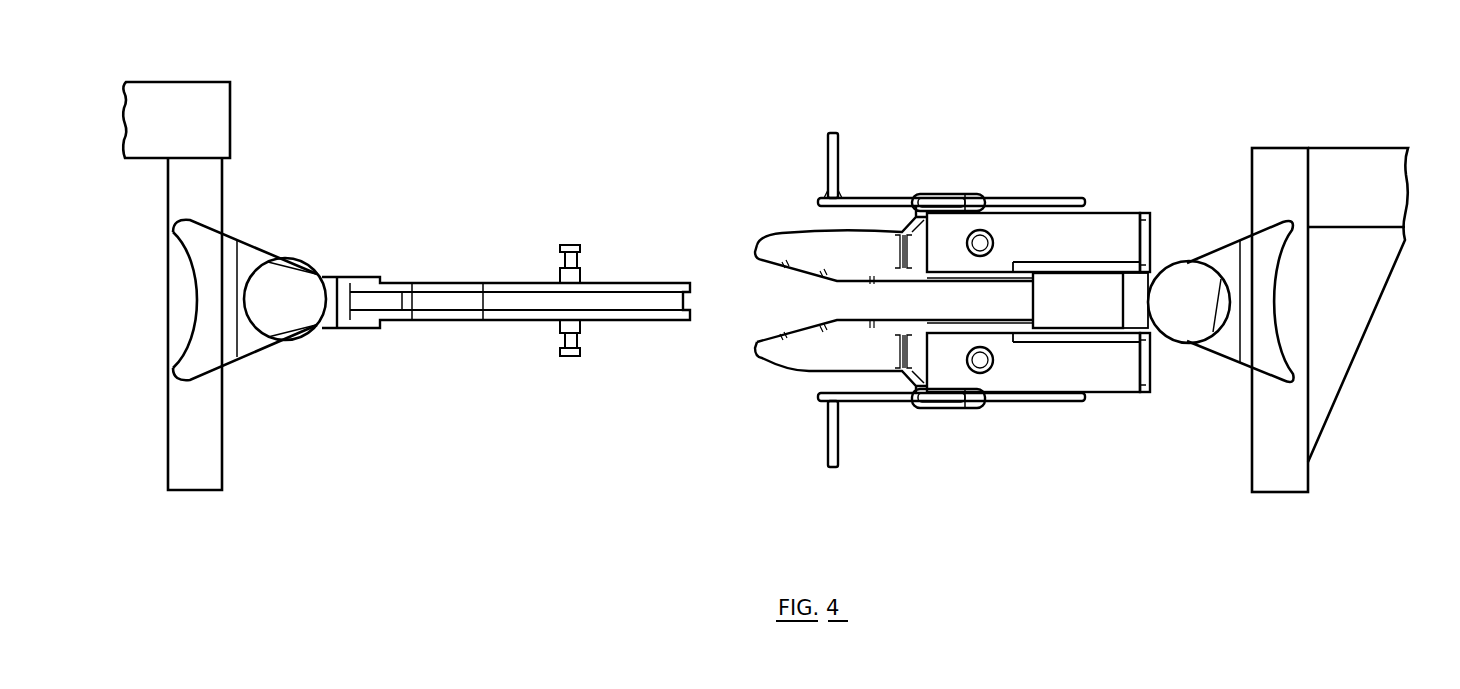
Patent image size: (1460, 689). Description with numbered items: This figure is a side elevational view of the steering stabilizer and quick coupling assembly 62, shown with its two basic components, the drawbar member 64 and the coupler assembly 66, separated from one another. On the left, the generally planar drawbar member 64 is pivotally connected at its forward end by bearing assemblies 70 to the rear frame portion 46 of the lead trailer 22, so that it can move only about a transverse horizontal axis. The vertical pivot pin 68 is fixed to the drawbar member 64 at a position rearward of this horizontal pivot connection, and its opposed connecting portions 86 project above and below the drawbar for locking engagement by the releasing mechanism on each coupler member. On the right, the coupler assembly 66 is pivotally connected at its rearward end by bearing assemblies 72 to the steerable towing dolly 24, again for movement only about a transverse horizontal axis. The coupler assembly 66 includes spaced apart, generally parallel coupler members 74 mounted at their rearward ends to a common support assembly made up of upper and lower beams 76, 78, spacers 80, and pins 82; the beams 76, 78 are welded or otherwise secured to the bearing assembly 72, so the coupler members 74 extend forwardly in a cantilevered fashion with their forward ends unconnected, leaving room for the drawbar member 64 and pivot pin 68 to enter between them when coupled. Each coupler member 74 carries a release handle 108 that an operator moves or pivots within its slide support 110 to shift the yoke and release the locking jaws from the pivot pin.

The lead trailer 22 is at (239, 70).
The steerable towing dolly 24 is at (1309, 128).
The rear frame portion 46 is at (215, 436).
The steering stabilizer and quick coupling assembly 62 is at (694, 197).
The drawbar member 64 is at (478, 327).
The coupler assembly 66 is at (952, 310).
The vertical pivot pin 68 is at (576, 294).
The bearing assemblies 70 is at (296, 318).
The bearing assemblies 72 is at (1188, 325).
The coupler members 74 is at (778, 252).
The upper beam 76 is at (1108, 251).
The lower beam 78 is at (1103, 379).
The spacers 80 is at (1087, 316).
The pins 82 is at (993, 241).
The connecting portions 86 is at (565, 258).
The release handle 108 is at (878, 198).
The slide support 110 is at (975, 193).